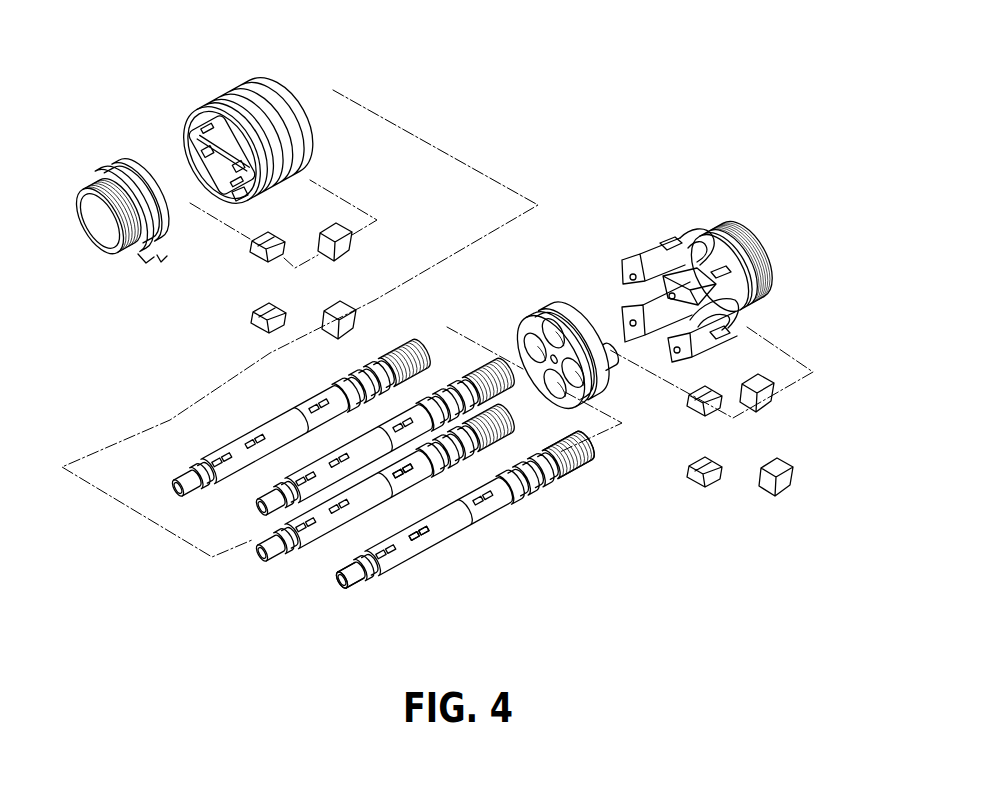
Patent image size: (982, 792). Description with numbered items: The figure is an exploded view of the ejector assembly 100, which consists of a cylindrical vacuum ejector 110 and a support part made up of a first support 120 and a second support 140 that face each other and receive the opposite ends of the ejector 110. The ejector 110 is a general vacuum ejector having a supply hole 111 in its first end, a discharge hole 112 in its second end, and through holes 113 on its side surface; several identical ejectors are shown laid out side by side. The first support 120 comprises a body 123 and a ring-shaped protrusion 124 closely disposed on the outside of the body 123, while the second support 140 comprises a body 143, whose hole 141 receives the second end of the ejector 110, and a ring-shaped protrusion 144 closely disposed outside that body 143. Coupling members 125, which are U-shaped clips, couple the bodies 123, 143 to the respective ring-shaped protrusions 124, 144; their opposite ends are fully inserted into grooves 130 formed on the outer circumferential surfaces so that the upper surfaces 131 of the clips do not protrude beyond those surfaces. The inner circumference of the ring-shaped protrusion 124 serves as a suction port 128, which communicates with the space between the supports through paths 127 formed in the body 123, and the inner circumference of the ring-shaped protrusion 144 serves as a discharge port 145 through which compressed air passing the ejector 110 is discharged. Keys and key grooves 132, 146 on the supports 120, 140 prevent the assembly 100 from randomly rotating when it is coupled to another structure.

The assembly 100 is at (640, 94).
The vacuum ejector 110 is at (525, 522).
The supply hole 111 is at (338, 592).
The discharge hole 112 is at (594, 447).
The through holes 113 is at (468, 483).
The first support 120 is at (193, 43).
The body 123 is at (234, 79).
The ring-shaped protrusion 124 is at (112, 158).
The coupling members 125 is at (344, 262).
The paths 127 is at (241, 194).
The suction port 128 is at (94, 255).
The grooves 130 is at (215, 203).
The upper surfaces 131 is at (342, 241).
The key 132 is at (158, 262).
The second support 140 is at (645, 187).
The hole 141 is at (533, 353).
The body 143 is at (538, 316).
The ring-shaped protrusion 144 is at (678, 236).
The discharge port 145 is at (775, 268).
The key groove 146 is at (730, 333).